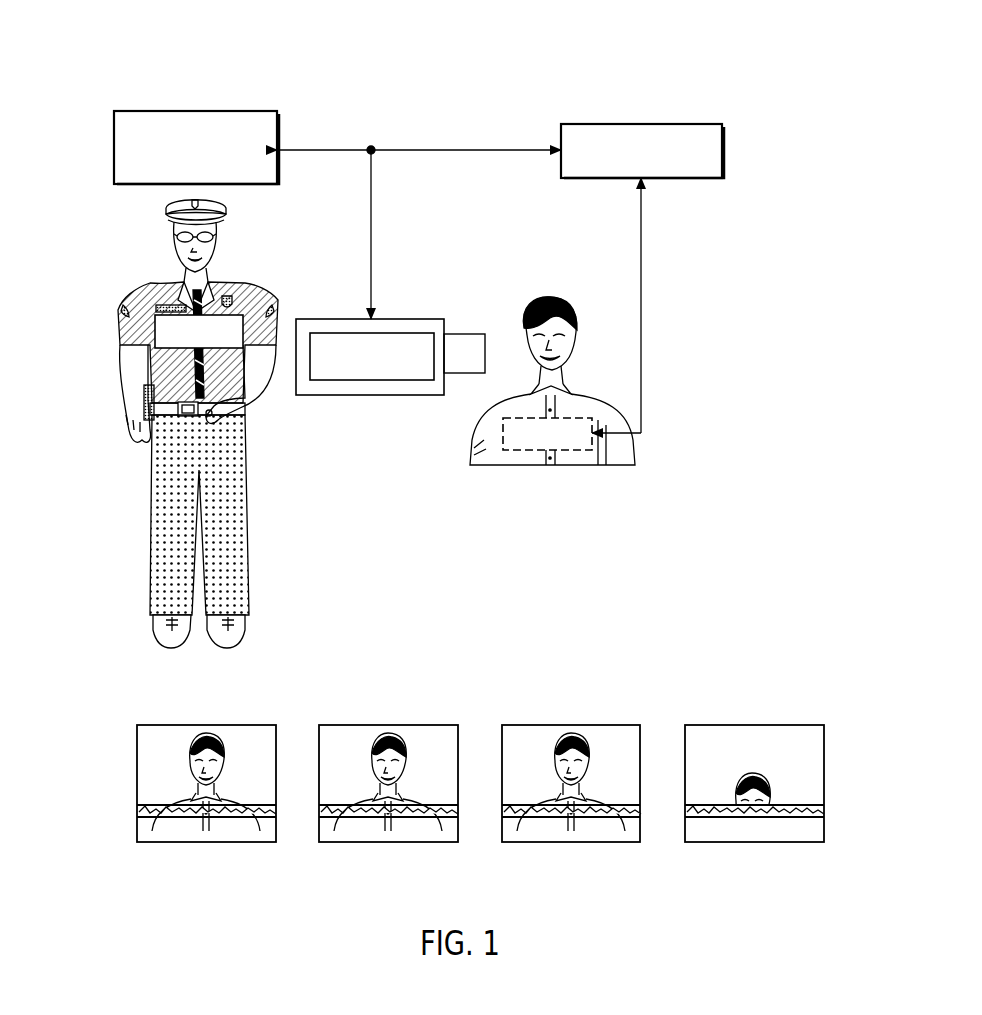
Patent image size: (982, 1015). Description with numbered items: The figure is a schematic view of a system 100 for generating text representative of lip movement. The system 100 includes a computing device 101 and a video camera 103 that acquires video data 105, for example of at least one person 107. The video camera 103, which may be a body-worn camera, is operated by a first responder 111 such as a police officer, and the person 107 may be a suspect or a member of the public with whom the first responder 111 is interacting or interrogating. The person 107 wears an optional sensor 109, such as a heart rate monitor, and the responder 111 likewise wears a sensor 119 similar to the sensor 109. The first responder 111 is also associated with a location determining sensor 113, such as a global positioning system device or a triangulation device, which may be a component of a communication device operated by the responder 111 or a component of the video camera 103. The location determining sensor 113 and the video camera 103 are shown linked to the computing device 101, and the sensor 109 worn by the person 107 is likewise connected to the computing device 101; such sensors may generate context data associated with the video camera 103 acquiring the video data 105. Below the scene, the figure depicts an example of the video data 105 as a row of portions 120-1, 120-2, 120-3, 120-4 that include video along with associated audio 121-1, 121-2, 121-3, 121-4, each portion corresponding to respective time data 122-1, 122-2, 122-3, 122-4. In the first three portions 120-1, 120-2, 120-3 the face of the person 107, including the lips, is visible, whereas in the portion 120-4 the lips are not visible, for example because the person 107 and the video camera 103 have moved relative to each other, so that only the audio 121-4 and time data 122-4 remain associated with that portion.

The system 100 is at (126, 38).
The computing device 101 is at (724, 152).
The video camera 103 is at (307, 395).
The video data 105 is at (370, 380).
The person 107 is at (572, 352).
The sensor 109 is at (567, 452).
The first responder 111 is at (176, 246).
The location determining sensor 113 is at (114, 147).
The sensor 119 is at (155, 333).
The portion 120-1 is at (206, 725).
The portion 120-2 is at (388, 725).
The portion 120-3 is at (571, 725).
The portion 120-4 is at (754, 725).
The audio 121-1 is at (257, 817).
The audio 121-2 is at (439, 817).
The audio 121-3 is at (622, 817).
The audio 121-4 is at (805, 817).
The time data 122-1 is at (173, 842).
The time data 122-2 is at (355, 842).
The time data 122-3 is at (538, 842).
The time data 122-4 is at (721, 842).